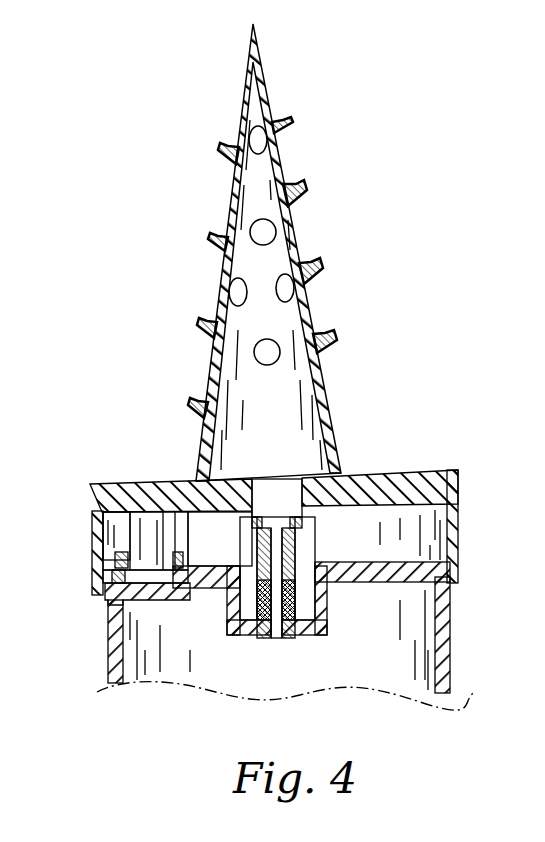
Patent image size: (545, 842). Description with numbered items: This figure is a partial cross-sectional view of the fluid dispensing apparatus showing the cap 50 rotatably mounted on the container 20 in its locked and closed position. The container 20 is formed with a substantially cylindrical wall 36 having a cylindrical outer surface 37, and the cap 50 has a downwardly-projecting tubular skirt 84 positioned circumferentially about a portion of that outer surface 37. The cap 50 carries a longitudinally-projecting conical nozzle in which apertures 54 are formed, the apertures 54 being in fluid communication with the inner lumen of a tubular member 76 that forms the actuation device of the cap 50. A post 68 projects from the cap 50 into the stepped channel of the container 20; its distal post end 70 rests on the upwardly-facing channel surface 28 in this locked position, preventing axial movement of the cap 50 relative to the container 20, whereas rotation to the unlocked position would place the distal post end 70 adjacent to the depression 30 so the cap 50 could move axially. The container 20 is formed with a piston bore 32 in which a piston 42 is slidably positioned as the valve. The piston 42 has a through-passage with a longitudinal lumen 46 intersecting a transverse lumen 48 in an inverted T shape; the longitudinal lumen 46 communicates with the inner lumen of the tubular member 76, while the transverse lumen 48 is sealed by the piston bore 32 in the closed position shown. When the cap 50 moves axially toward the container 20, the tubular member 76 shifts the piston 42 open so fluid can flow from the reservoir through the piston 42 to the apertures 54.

The container 20 is at (450, 714).
The channel surface 28 is at (177, 553).
The depression 30 is at (165, 592).
The piston bore 32 is at (240, 630).
The cylindrical wall 36 is at (110, 665).
The outer surface 37 is at (100, 683).
The piston 42 is at (318, 597).
The longitudinal lumen 46 is at (297, 545).
The transverse lumen 48 is at (297, 636).
The cap 50 is at (432, 425).
The apertures 54 is at (303, 268).
The post 68 is at (107, 545).
The distal post end 70 is at (100, 586).
The tubular member 76 is at (243, 558).
The tubular skirt 84 is at (462, 560).